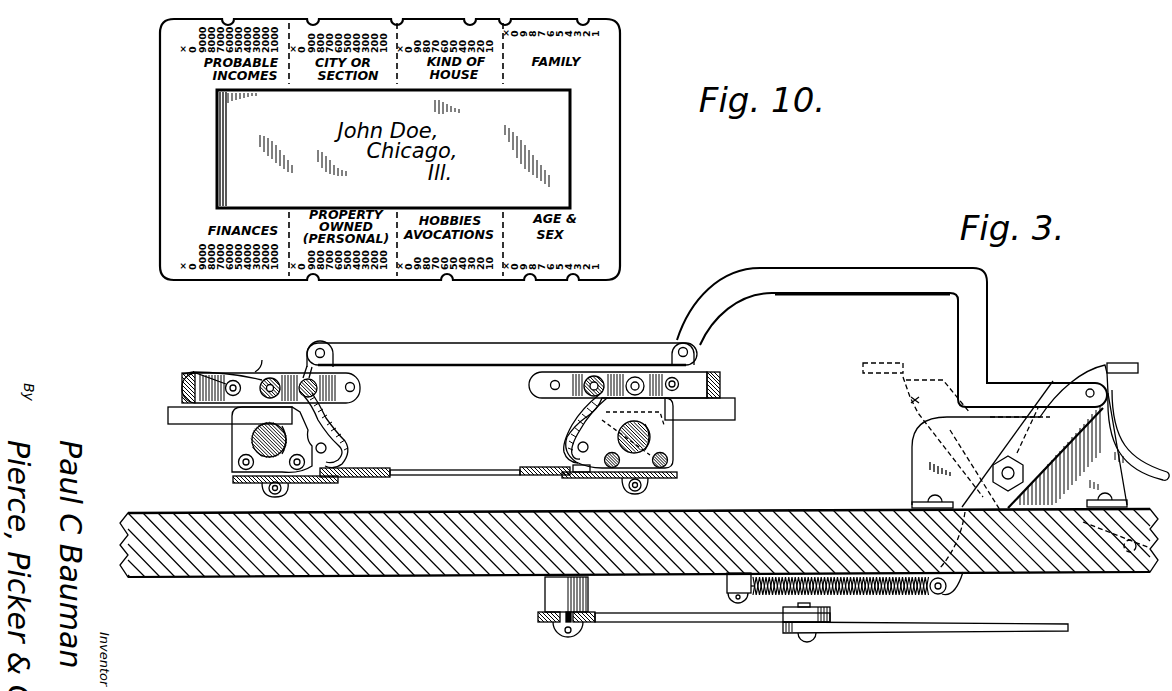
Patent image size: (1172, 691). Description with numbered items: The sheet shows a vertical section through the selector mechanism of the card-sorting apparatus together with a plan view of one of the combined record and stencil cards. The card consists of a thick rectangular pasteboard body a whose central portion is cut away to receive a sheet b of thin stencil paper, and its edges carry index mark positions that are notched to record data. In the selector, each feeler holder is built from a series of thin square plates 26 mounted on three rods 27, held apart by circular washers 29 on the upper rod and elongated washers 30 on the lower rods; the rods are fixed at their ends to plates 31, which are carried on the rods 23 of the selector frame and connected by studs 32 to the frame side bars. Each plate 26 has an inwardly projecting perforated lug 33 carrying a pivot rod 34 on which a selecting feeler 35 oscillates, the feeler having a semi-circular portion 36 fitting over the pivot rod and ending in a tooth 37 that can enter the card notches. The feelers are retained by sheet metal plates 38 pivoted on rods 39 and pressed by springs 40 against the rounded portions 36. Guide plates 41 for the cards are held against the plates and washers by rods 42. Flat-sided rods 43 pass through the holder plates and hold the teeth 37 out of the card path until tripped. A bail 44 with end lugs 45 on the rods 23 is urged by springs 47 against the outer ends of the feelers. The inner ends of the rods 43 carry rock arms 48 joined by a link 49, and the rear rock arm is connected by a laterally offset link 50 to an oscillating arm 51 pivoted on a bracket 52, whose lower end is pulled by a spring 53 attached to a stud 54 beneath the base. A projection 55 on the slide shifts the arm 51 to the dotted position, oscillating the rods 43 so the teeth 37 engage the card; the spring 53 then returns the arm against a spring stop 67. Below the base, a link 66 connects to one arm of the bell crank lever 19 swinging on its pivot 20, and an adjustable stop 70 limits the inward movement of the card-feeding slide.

In FIG. 3, the bell crank lever 19 is at (590, 626).
In FIG. 3, the pivot 20 is at (562, 632).
In FIG. 3, the rods of the selector frame 23 is at (233, 380).
In FIG. 3, the plates 26 is at (240, 440).
In FIG. 3, the rods 27 is at (300, 378).
In FIG. 3, the circular washers 29 is at (270, 377).
In FIG. 3, the elongated washers 30 is at (235, 482).
In FIG. 3, the plates 31 is at (355, 396).
In FIG. 3, the studs 32 is at (356, 388).
In FIG. 3, the perforated lug 33 is at (565, 440).
In FIG. 3, the pivot rods 34 is at (327, 448).
In FIG. 3, the selecting feelers 35 is at (170, 415).
In FIG. 3, the semi-circular portion 36 is at (335, 460).
In FIG. 3, the tooth 37 is at (390, 470).
In FIG. 3, the sheet metal plates 38 is at (326, 418).
In FIG. 3, the rods 39 is at (318, 386).
In FIG. 3, the springs 40 is at (330, 355).
In FIG. 3, the guide plates 41 is at (340, 482).
In FIG. 3, the rods 42 is at (268, 491).
In FIG. 3, the rods 43 is at (250, 448).
In FIG. 3, the bail 44 is at (182, 391).
In FIG. 3, the lugs 45 is at (210, 377).
In FIG. 3, the springs 47 is at (257, 372).
In FIG. 3, the rock arms 48 is at (331, 347).
In FIG. 3, the link 49 is at (473, 352).
In FIG. 3, the link 50 is at (812, 283).
In FIG. 3, the oscillating arm 51 is at (905, 405).
In FIG. 3, the bracket 52 is at (912, 464).
In FIG. 3, the spring 53 is at (892, 596).
In FIG. 3, the stud 54 is at (727, 584).
In FIG. 3, the projection 55 is at (886, 363).
In FIG. 3, the link 66 is at (945, 636).
In FIG. 3, the spring buffer or stop 67 is at (1133, 458).
In FIG. 3, the adjustable stop 70 is at (355, 575).
In FIG. 10, the body a is at (162, 135).
In FIG. 3, the body a is at (392, 477).
In FIG. 10, the sheet b is at (258, 190).
In FIG. 3, the sheet b is at (445, 476).